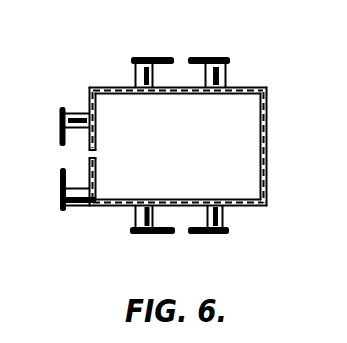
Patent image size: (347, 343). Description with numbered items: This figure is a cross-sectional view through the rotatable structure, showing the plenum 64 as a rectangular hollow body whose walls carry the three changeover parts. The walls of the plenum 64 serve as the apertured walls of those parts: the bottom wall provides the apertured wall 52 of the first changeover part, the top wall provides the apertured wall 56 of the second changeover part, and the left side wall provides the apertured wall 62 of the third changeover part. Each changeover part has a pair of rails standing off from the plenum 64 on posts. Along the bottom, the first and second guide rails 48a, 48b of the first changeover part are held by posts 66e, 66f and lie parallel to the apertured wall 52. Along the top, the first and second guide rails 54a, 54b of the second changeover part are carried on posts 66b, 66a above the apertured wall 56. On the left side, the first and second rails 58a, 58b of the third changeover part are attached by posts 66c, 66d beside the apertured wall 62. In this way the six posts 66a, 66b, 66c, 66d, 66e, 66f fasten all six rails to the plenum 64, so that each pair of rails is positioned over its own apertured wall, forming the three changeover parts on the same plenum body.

The plenum 64 is at (267, 92).
The apertured wall 62 is at (99, 142).
The apertured wall 56 is at (160, 97).
The apertured wall 52 is at (153, 195).
The first guide rail 54a is at (198, 57).
The second guide rail 54b is at (163, 57).
The first guide rail 48a is at (201, 235).
The second guide rail 48b is at (158, 236).
The first rail 58a is at (61, 136).
The second rail 58b is at (60, 185).
The post 66a is at (227, 74).
The post 66b is at (138, 78).
The post 66c is at (78, 110).
The post 66d is at (73, 208).
The post 66e is at (133, 216).
The post 66f is at (225, 215).